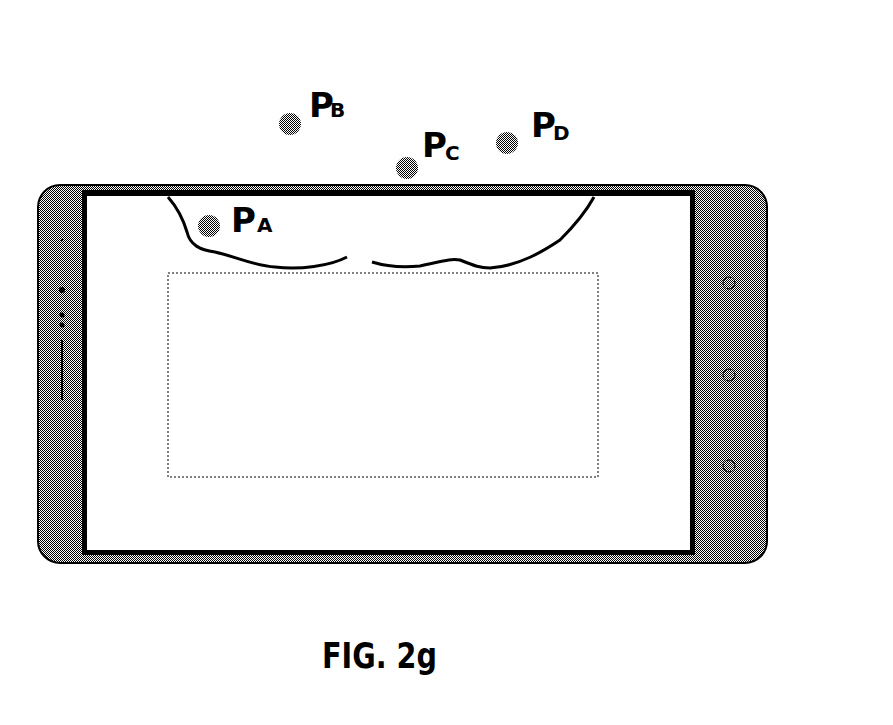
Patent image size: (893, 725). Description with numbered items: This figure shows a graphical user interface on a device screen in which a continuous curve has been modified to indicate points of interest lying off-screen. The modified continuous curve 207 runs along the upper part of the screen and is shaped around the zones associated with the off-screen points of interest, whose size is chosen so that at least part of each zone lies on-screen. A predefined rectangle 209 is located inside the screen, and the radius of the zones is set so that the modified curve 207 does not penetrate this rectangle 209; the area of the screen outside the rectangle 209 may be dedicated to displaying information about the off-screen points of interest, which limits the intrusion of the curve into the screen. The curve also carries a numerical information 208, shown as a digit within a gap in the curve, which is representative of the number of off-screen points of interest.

The modified continuous curve 207 is at (488, 262).
The numerical information 208 is at (358, 240).
The rectangle 209 is at (600, 477).